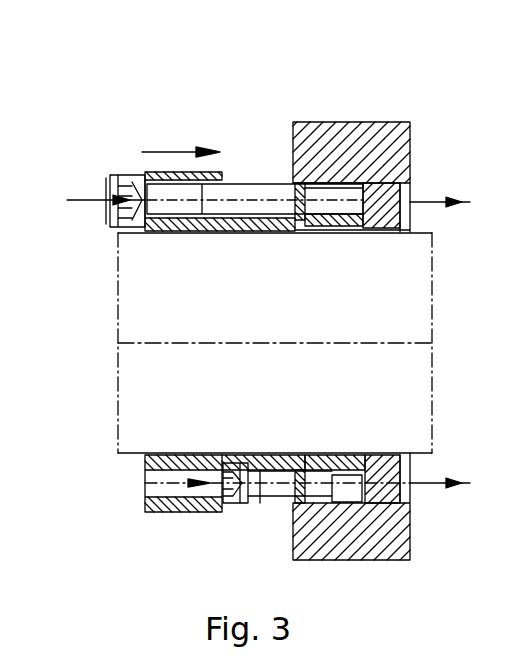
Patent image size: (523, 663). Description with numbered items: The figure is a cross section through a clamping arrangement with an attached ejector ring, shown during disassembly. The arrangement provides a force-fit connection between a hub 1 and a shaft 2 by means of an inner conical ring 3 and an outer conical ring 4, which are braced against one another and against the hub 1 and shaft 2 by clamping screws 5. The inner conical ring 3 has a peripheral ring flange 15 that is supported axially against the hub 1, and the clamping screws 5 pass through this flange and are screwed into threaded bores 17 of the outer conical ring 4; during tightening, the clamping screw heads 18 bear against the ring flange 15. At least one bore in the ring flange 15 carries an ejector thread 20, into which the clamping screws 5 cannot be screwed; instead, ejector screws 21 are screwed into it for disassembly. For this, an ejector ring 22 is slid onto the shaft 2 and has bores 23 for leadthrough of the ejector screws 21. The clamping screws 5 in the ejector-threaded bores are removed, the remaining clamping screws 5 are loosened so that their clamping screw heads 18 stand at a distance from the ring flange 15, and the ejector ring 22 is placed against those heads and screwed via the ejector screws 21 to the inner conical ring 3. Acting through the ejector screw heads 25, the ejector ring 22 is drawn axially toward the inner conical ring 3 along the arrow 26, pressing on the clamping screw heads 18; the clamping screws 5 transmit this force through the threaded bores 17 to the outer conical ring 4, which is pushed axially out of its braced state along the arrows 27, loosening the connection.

The hub 1 is at (372, 130).
The shaft 2 is at (128, 294).
The inner conical ring 3 is at (303, 221).
The outer conical ring 4 is at (388, 195).
The clamping screws 5 is at (263, 508).
The ring flange 15 is at (272, 178).
The threaded bores 17 is at (350, 490).
The clamping screw heads 18 is at (235, 508).
The ejector thread 20 is at (226, 293).
The ejector screws 21 is at (238, 188).
The ejector ring 22 is at (148, 180).
The bores 23 is at (143, 182).
The ejector screw heads 25 is at (105, 180).
The arrow 26 is at (165, 150).
The arrows 27 is at (458, 207).